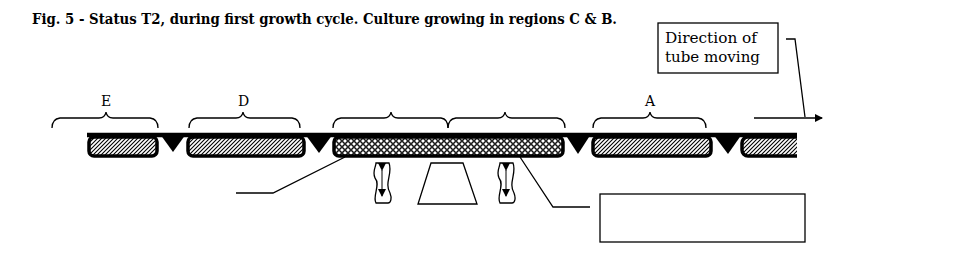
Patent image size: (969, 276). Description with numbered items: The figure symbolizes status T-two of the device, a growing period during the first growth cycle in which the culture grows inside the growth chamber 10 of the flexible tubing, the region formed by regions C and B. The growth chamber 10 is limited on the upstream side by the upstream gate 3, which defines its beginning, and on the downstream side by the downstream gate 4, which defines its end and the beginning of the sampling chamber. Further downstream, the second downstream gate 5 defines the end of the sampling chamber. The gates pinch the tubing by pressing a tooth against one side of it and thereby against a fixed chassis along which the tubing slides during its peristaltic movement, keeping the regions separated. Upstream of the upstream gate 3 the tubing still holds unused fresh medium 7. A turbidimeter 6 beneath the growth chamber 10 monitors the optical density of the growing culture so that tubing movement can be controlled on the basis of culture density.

The upstream gate 3 is at (293, 98).
The downstream gate 4 is at (599, 98).
The second downstream gate 5 is at (744, 158).
The turbidimeter 6 is at (454, 202).
The fresh medium 7 is at (210, 158).
The growth chamber 10 is at (565, 82).